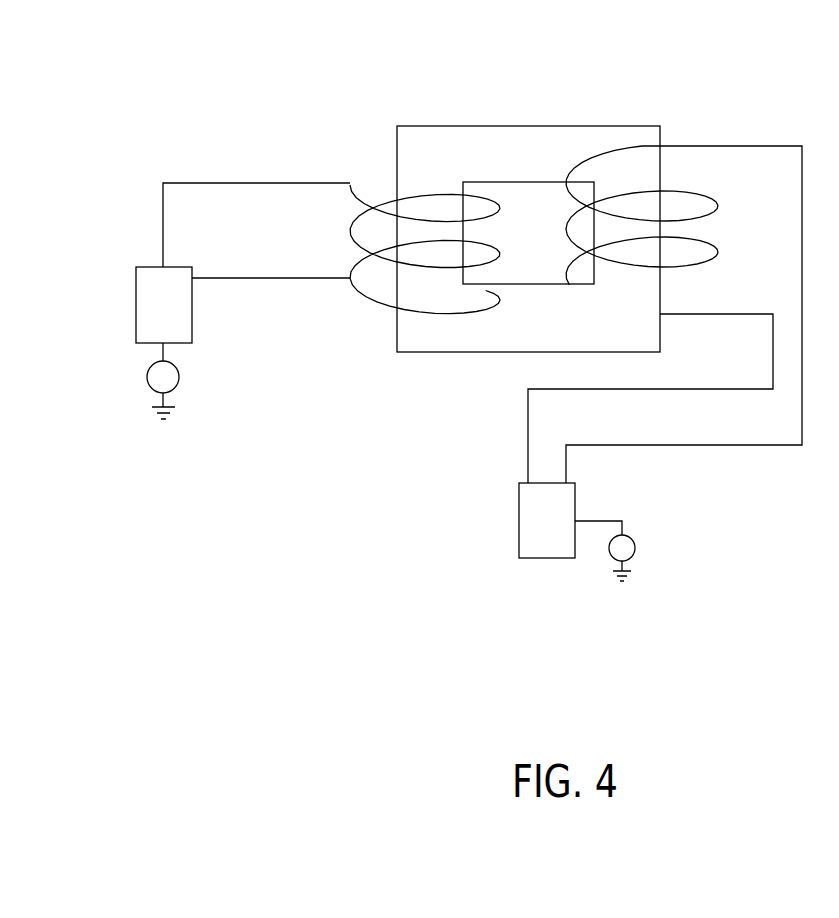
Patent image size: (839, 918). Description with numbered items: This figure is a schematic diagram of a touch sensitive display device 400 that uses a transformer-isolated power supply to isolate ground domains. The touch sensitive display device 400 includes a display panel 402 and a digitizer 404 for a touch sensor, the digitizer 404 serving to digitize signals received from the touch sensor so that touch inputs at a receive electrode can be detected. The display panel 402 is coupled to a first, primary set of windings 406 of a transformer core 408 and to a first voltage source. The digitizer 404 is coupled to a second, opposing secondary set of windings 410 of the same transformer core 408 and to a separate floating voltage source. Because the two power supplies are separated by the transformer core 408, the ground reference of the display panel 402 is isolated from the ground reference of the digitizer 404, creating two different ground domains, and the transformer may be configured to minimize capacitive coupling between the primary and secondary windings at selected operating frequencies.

The touch sensitive display device 400 is at (115, 61).
The display panel 402 is at (145, 265).
The digitizer 404 is at (525, 480).
The first set of windings 406 is at (386, 179).
The transformer core 408 is at (435, 125).
The second set of windings 410 is at (644, 142).